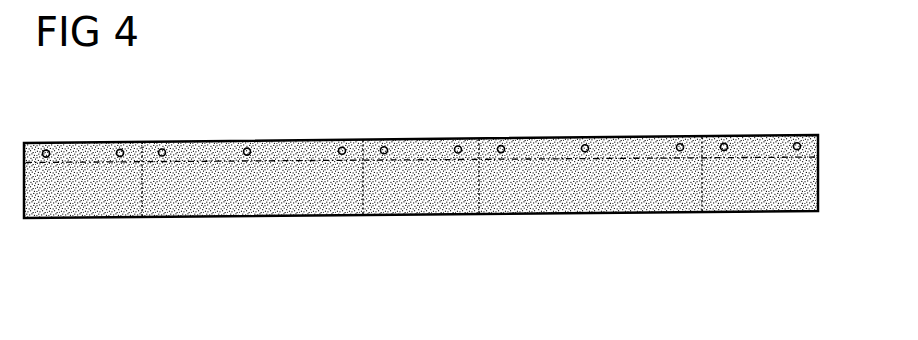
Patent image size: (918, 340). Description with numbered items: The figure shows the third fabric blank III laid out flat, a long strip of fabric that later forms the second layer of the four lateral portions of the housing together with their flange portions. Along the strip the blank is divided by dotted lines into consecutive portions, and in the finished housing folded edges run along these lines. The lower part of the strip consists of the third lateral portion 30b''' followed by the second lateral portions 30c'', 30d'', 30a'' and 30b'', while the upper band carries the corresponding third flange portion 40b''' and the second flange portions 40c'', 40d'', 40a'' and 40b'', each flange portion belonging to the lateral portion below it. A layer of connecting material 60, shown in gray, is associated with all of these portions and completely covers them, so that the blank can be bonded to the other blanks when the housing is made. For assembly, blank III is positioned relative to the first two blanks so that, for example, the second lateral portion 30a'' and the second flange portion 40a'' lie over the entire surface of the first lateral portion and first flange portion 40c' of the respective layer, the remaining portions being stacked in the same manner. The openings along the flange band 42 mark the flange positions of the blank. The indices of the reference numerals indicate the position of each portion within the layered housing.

The fabric blank III is at (688, 90).
The conveyor belt 42 is at (503, 0).
The opening 40c' is at (357, 20).
The third flange portion 40b''' is at (83, 124).
The second flange portion 40c'' is at (252, 123).
The second flange portion 40d'' is at (421, 119).
The second flange portion 40a'' is at (591, 117).
The second flange portion 40b'' is at (764, 113).
The third lateral portion 30b''' is at (95, 208).
The second lateral portion 30c'' is at (294, 207).
The second lateral portion 30d'' is at (443, 203).
The second lateral portion 30a'' is at (631, 201).
The second lateral portion 30b'' is at (743, 229).
The connecting material 60 is at (656, 192).